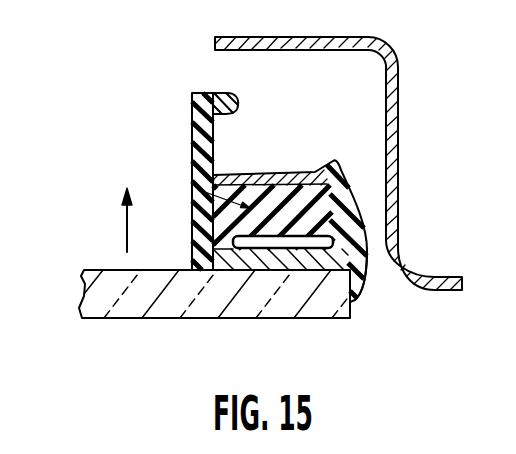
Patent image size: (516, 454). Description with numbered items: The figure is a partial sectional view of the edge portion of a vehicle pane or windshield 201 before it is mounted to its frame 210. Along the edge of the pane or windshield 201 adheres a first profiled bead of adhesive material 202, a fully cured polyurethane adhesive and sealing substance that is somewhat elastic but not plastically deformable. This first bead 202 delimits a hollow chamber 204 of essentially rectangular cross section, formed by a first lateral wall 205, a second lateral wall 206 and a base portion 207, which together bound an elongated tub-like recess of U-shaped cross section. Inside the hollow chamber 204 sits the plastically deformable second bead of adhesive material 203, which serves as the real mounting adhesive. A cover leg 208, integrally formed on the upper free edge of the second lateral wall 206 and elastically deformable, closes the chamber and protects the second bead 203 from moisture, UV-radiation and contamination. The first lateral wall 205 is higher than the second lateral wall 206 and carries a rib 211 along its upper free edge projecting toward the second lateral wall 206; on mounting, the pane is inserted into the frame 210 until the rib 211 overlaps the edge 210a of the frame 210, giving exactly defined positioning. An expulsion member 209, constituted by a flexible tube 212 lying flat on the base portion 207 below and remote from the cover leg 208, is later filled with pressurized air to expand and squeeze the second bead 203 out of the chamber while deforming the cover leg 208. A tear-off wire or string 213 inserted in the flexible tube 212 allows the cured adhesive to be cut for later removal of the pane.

The pane or windshield 201 is at (110, 302).
The first profiled bead of adhesive material 202 is at (357, 173).
The second bead of adhesive material 203 is at (333, 223).
The hollow chamber 204 is at (193, 187).
The first lateral wall 205 is at (193, 127).
The second lateral wall 206 is at (356, 244).
The base portion 207 is at (260, 262).
The cover leg 208 is at (290, 182).
The expulsion member 209 is at (351, 310).
The frame 210 is at (393, 90).
The edge of the flange or frame 210a is at (213, 43).
The rib 211 is at (217, 100).
The flexible tube 212 is at (216, 271).
The tear-off wire or string 213 is at (291, 248).